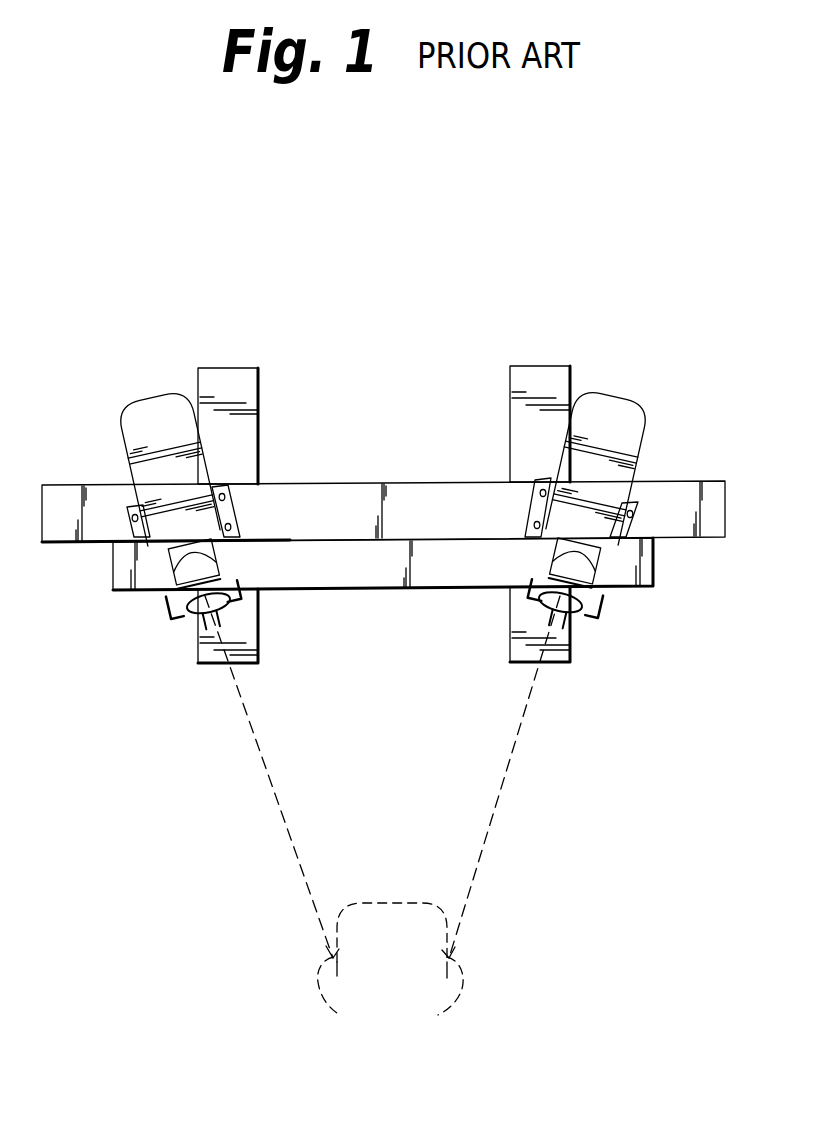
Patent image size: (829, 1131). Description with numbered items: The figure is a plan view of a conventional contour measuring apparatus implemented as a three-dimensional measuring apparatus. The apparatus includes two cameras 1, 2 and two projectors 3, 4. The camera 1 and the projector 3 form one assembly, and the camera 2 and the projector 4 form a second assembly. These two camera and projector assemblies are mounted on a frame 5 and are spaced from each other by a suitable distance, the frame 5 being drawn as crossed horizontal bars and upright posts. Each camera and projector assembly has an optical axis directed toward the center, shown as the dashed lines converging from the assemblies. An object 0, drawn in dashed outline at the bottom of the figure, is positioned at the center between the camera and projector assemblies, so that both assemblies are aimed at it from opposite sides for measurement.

The object 0 is at (452, 952).
The camera 1 is at (187, 574).
The camera 2 is at (582, 570).
The projector 3 is at (145, 420).
The projector 4 is at (622, 418).
The frame 5 is at (367, 470).